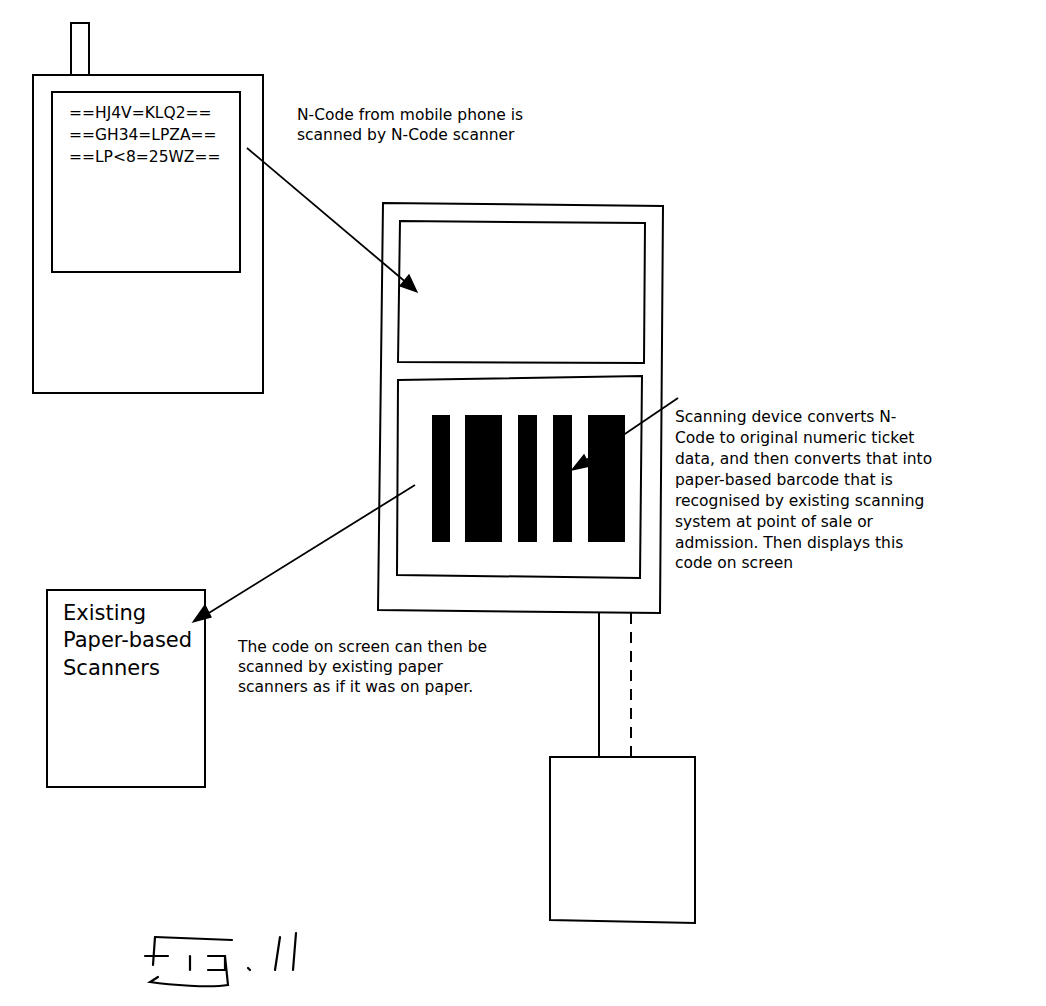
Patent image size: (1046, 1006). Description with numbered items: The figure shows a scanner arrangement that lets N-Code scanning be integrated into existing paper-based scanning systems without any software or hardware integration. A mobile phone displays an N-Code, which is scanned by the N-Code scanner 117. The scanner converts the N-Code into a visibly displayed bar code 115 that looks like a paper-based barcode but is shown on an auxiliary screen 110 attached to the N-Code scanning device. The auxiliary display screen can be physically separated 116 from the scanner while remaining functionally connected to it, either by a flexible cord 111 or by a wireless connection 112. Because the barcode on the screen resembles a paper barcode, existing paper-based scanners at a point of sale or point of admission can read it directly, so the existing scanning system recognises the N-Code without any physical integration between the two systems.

The N-Code scanner 117 is at (615, 202).
The auxiliary screen 110 is at (593, 395).
The bar code 115 is at (605, 417).
The flexible cord 111 is at (599, 677).
The wireless connection 112 is at (632, 670).
The physically separated display 116 is at (670, 802).